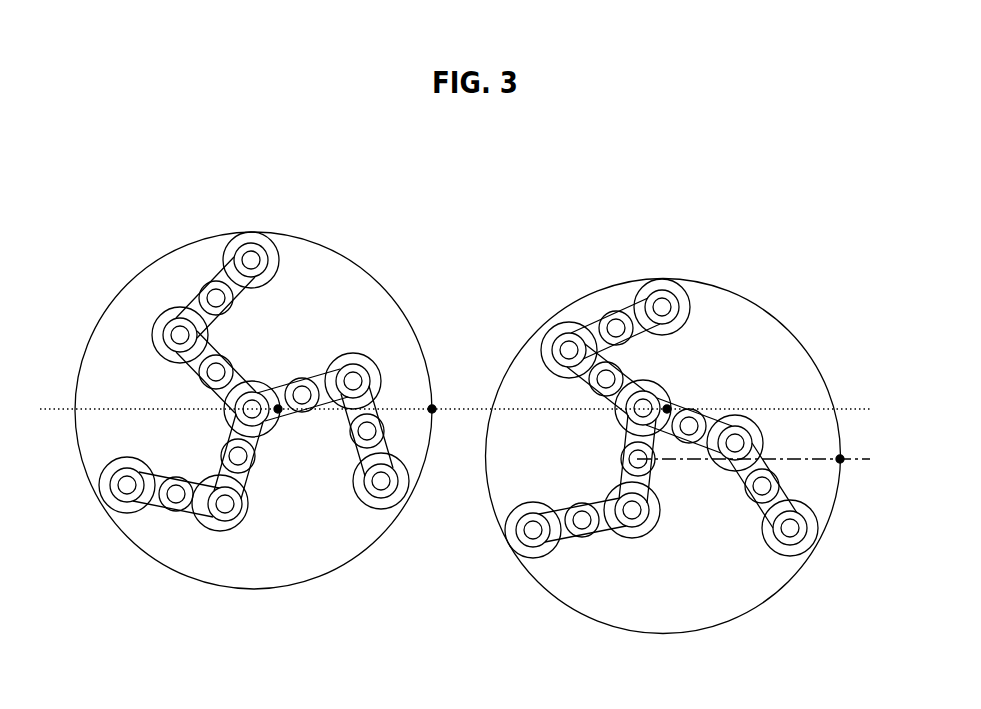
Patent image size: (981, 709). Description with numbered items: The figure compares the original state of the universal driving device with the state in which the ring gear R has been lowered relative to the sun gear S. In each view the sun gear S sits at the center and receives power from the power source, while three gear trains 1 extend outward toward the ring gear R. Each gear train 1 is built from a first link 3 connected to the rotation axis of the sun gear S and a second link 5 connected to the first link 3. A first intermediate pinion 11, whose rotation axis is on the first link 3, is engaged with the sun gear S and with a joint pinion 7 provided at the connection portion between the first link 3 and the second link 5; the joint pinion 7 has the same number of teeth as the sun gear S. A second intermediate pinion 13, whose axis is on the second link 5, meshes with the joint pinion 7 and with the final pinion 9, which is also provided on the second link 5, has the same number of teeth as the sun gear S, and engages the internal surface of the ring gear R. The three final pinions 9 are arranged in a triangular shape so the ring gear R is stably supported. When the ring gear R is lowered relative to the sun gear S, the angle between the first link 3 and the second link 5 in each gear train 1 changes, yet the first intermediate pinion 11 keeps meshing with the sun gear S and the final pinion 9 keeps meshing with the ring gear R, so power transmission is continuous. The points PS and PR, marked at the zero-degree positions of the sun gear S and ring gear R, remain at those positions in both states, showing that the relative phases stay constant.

The gear train 1 is at (186, 527).
The first link 3 is at (182, 362).
The second link 5 is at (228, 257).
The joint pinion 7 is at (157, 333).
The final pinion 9 is at (249, 233).
The first intermediate pinion 11 is at (218, 375).
The second intermediate pinion 13 is at (200, 283).
The ring gear R is at (316, 240).
The sun gear S is at (274, 418).
The point PS is at (277, 417).
The point PR is at (432, 409).